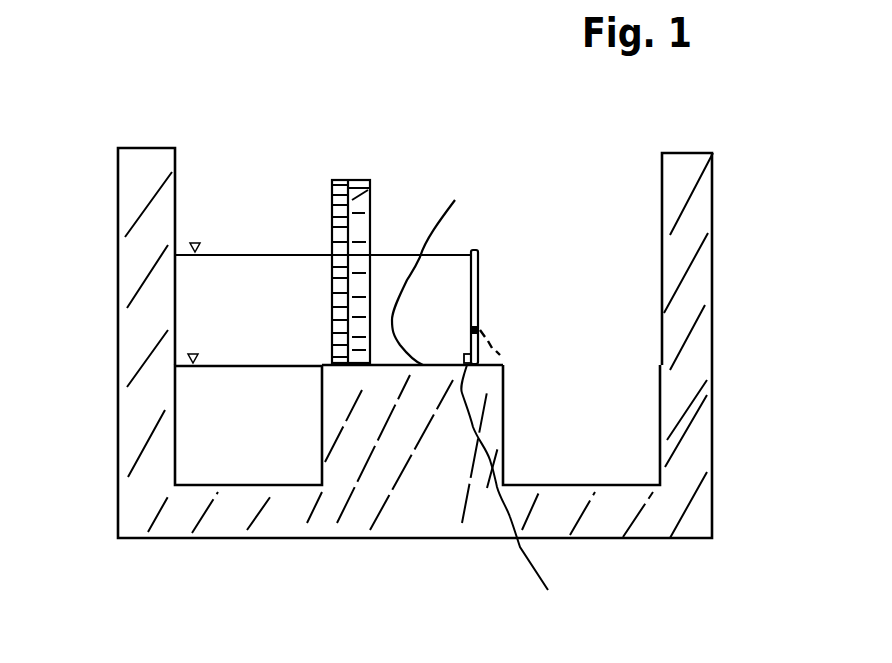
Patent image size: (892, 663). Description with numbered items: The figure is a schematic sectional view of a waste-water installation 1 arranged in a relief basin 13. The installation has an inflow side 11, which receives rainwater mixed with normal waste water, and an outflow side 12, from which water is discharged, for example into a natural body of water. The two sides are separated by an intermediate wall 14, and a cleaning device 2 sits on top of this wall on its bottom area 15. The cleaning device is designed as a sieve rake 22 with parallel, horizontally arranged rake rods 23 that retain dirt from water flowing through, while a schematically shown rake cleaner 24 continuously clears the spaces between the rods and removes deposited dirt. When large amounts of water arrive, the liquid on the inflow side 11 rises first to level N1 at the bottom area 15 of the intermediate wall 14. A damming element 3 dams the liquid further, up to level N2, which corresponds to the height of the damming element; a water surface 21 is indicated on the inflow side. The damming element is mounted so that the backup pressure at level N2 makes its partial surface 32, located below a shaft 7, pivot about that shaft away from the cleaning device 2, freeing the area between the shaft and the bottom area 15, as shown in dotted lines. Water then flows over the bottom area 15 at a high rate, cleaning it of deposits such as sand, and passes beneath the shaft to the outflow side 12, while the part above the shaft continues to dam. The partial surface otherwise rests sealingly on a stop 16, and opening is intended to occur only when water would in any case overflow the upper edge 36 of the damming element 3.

The waste-water installation 1 is at (157, 103).
The cleaning device 2 is at (352, 122).
The damming element 3 is at (477, 262).
The shaft 7 is at (472, 330).
The inflow side 11 is at (210, 468).
The outflow side 12 is at (570, 440).
The relief basin 13 is at (697, 450).
The intermediate wall 14 is at (400, 453).
The bottom area 15 is at (365, 370).
The stop 16 is at (515, 494).
The water surface 21 is at (438, 265).
The sieve rake 22 is at (333, 198).
The rake rods 23 is at (333, 222).
The rake cleaner 24 is at (370, 183).
The partial surface 32 is at (470, 350).
The upper edge 36 is at (490, 327).
The level N1 is at (197, 338).
The level N2 is at (323, 228).